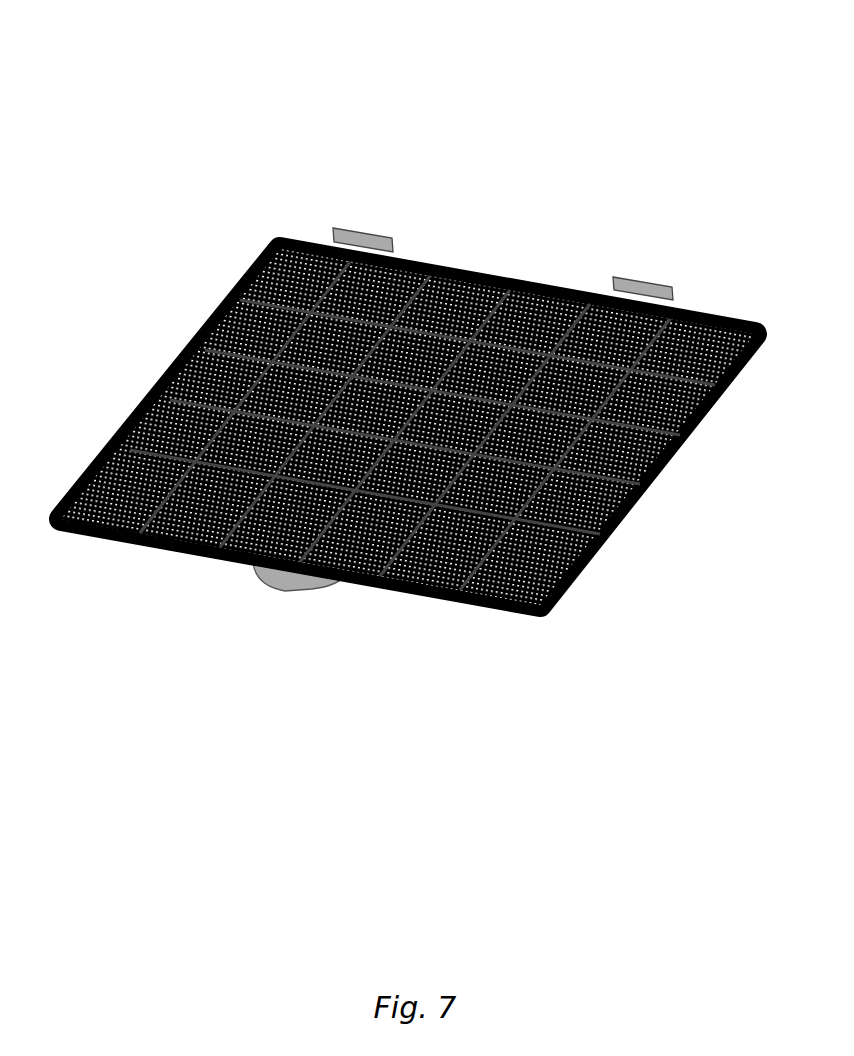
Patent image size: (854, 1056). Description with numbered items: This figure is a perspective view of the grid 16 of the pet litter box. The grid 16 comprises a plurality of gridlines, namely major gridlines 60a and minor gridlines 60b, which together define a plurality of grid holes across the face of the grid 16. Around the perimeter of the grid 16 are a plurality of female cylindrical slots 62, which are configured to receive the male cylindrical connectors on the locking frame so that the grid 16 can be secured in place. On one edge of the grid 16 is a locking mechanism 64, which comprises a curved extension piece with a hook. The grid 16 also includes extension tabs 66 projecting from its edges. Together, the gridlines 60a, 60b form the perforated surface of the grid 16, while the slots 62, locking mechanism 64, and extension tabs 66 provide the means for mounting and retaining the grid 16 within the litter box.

The grid 16 is at (699, 80).
The major gridlines 60a is at (254, 299).
The minor gridlines 60b is at (192, 373).
The female cylindrical slots 62 is at (492, 276).
The locking mechanism 64 is at (292, 580).
The extension tabs 66 is at (353, 240).